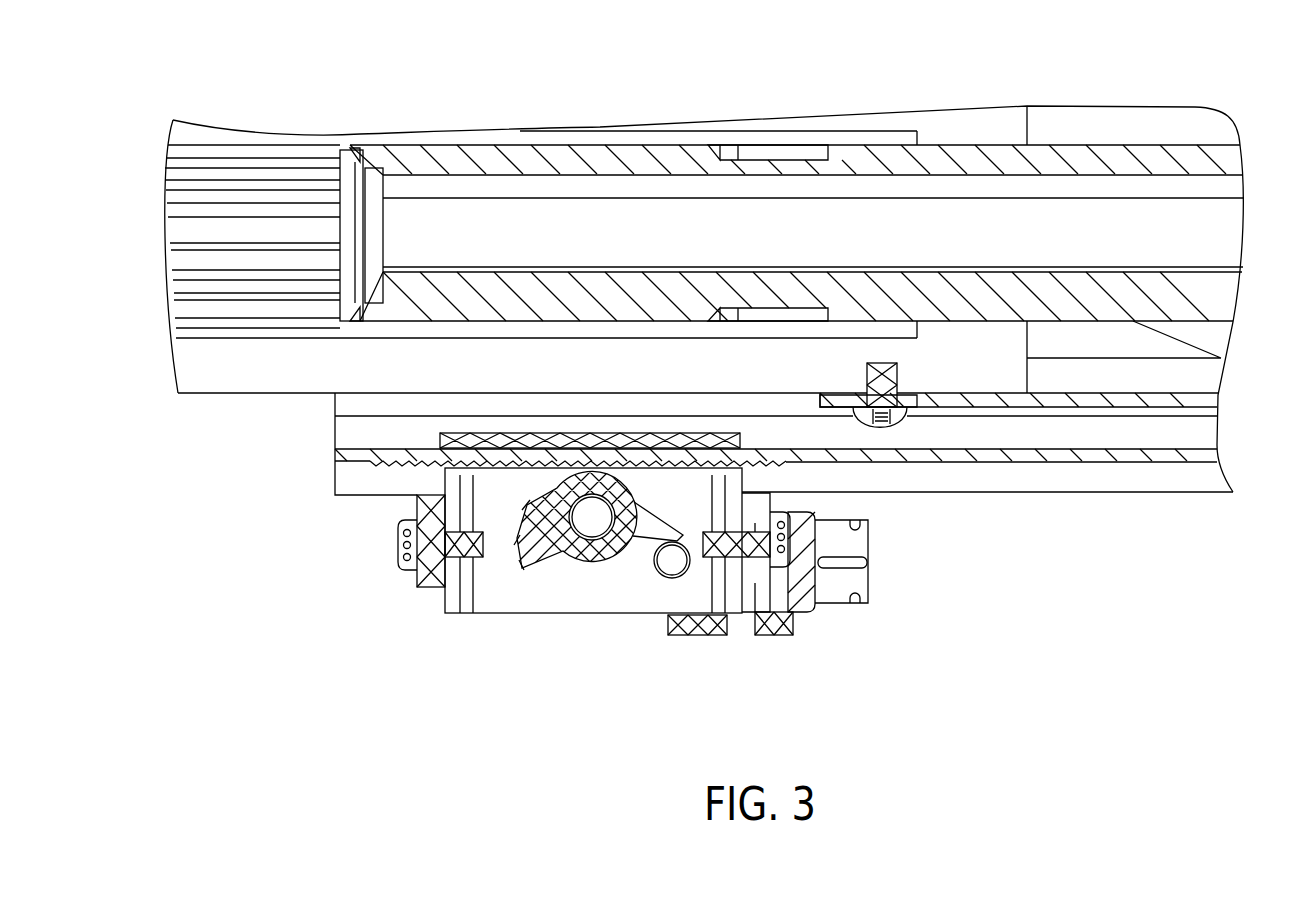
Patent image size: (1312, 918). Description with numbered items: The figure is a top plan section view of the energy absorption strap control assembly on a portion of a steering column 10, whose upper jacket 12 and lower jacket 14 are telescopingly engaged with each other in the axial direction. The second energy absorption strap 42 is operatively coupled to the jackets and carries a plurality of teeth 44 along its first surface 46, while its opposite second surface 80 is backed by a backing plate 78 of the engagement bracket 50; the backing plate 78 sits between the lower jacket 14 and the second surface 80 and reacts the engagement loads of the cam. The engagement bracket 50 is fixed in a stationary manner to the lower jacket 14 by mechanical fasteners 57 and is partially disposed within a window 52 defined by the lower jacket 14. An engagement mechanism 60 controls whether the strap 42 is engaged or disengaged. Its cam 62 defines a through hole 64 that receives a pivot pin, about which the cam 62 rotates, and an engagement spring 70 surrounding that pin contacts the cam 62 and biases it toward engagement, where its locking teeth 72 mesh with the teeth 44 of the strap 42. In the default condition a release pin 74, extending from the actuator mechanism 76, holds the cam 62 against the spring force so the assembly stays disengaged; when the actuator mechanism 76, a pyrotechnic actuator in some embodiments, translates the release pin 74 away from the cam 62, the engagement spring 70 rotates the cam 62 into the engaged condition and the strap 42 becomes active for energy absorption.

The steering column 10 is at (1242, 91).
The upper jacket 12 is at (242, 375).
The lower jacket 14 is at (1106, 134).
The second energy absorption strap 42 is at (377, 463).
The teeth 44 is at (443, 467).
The first surface 46 is at (1053, 460).
The engagement bracket 50 is at (517, 595).
The window 52 is at (730, 426).
The mechanical fasteners 57 is at (415, 570).
The engagement mechanism 60 is at (567, 582).
The cam 62 is at (537, 537).
The through hole 64 is at (603, 557).
The engagement spring 70 is at (590, 525).
The locking teeth 72 is at (515, 550).
The release pin 74 is at (672, 565).
The actuator mechanism 76 is at (825, 612).
The backing plate 78 is at (502, 440).
The second surface 80 is at (1167, 445).